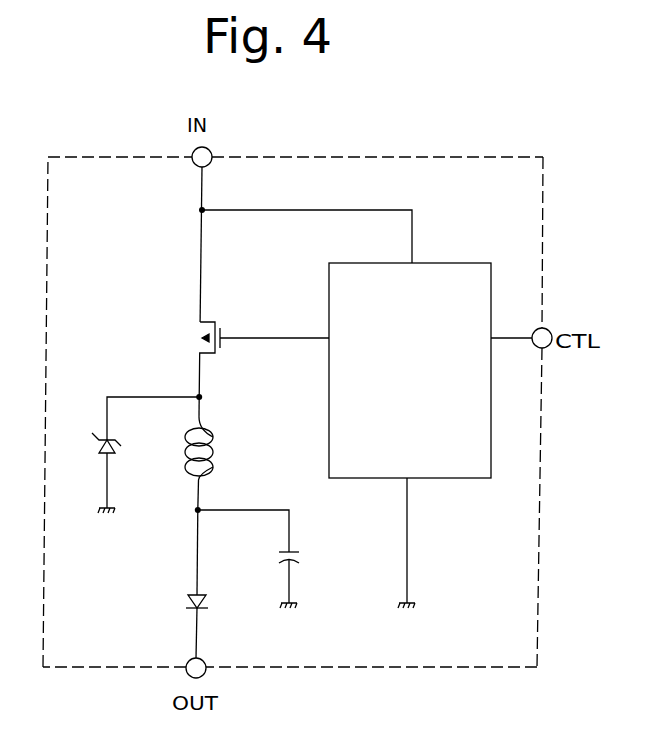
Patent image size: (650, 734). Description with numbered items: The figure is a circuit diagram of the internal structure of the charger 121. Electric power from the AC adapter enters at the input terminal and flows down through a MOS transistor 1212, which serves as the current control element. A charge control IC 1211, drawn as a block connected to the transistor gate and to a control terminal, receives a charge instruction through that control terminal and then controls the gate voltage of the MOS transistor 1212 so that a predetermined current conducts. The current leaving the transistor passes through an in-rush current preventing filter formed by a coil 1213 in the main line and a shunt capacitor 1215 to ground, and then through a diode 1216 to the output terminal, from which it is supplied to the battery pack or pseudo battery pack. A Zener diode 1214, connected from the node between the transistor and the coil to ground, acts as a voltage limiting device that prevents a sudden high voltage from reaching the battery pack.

The charger 121 is at (425, 156).
The charge control IC 1211 is at (450, 263).
The MOS transistor 1212 is at (192, 342).
The coil 1213 is at (218, 455).
The Zener diode 1214 is at (120, 447).
The capacitor 1215 is at (302, 559).
The diode 1216 is at (185, 598).